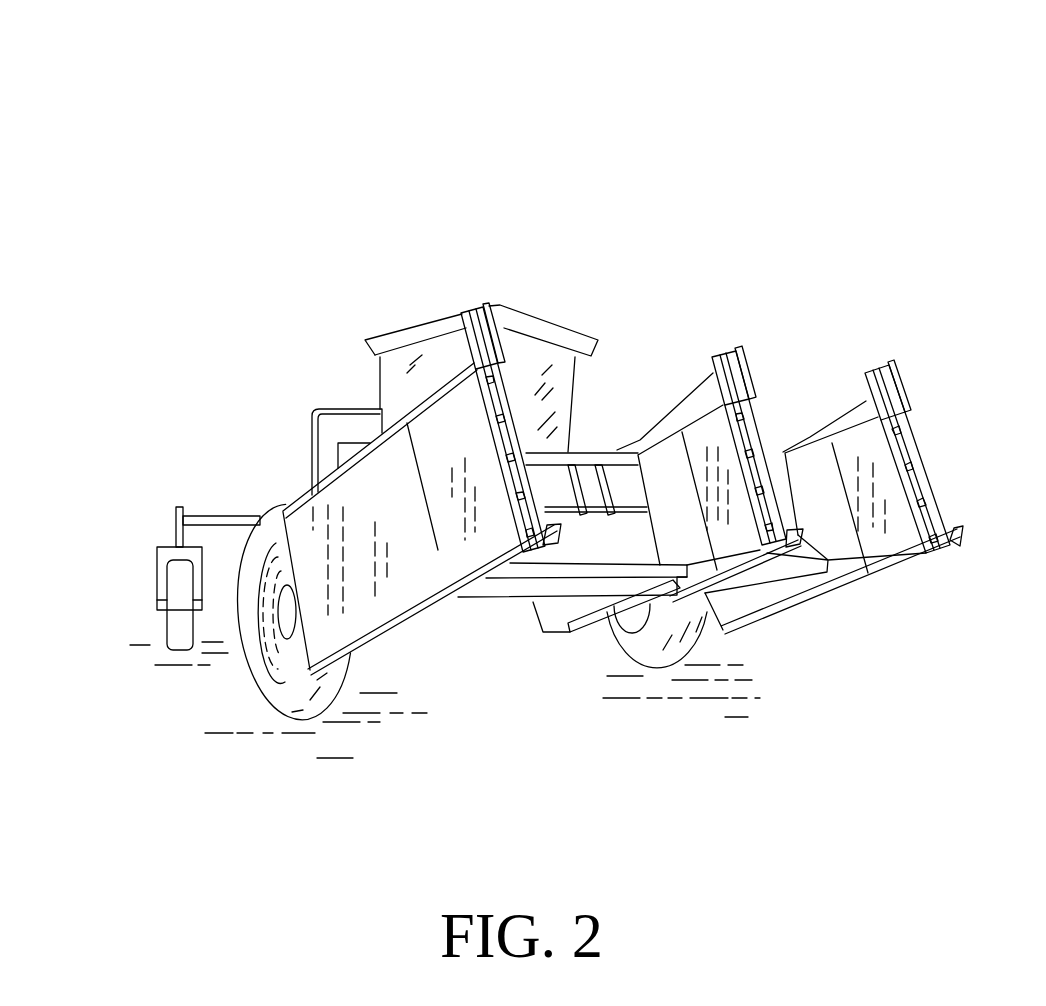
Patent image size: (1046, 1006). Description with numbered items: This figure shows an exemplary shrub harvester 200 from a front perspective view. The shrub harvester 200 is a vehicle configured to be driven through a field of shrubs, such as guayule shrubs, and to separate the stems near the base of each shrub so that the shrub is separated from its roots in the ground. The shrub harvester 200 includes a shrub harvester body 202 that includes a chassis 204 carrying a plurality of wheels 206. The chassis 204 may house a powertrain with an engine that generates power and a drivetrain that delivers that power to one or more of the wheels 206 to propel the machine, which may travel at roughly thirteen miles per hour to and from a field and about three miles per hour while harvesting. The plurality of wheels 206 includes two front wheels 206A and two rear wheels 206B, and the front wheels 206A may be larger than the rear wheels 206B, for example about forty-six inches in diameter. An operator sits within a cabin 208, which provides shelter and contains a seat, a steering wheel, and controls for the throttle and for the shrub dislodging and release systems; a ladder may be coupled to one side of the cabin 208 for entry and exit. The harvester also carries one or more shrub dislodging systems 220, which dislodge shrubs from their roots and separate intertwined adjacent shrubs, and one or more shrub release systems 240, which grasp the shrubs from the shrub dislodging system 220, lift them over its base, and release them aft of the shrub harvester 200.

The shrub harvester 200 is at (212, 110).
The shrub harvester body 202 is at (332, 430).
The chassis 204 is at (230, 517).
The wheels 206 is at (273, 697).
The front wheels 206A is at (258, 657).
The rear wheels 206B is at (180, 583).
The cabin 208 is at (430, 325).
The shrub dislodging system 220 is at (790, 424).
The shrub release system 240 is at (695, 350).